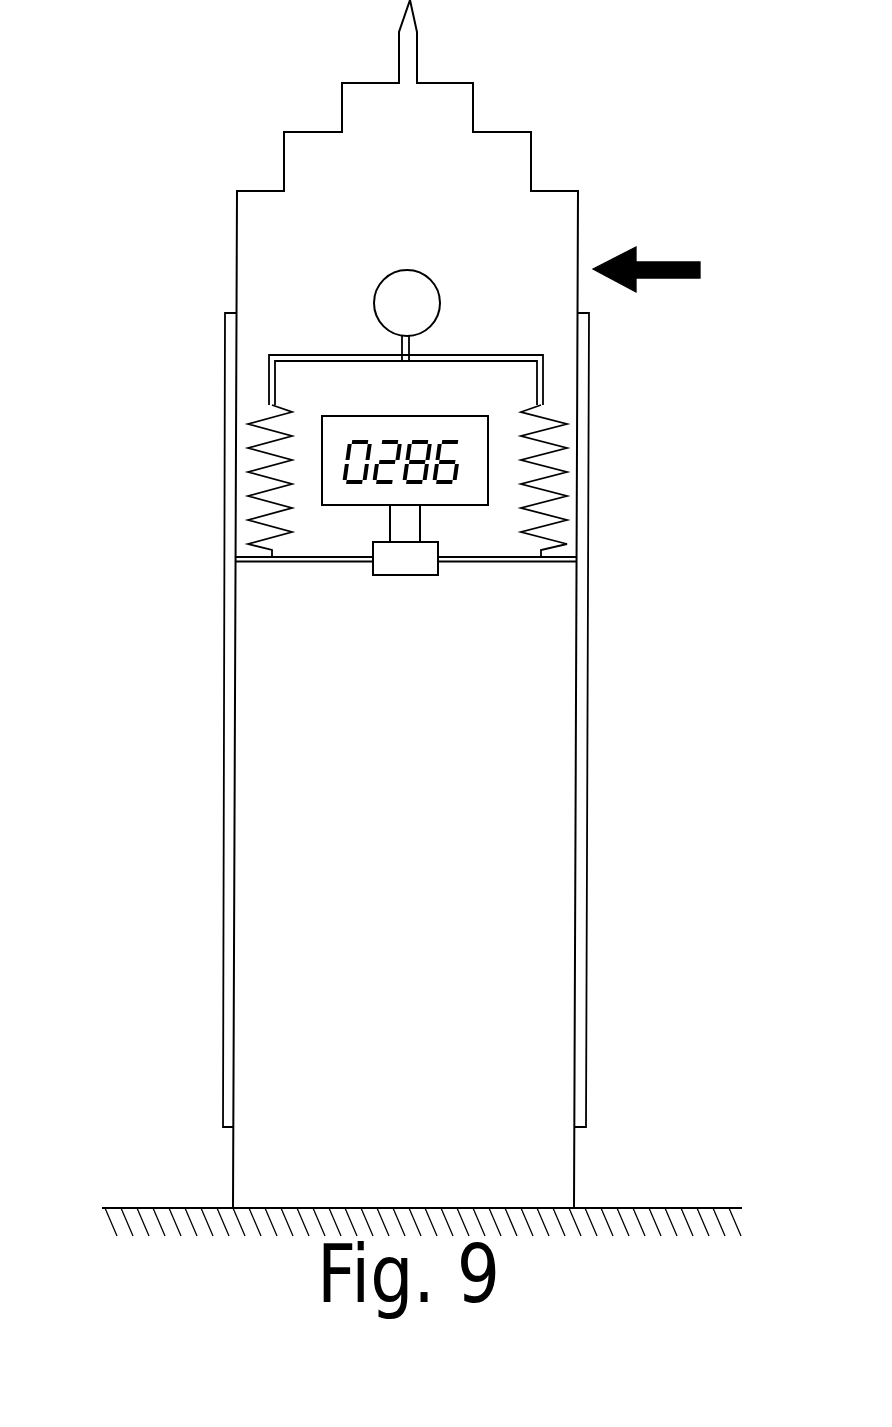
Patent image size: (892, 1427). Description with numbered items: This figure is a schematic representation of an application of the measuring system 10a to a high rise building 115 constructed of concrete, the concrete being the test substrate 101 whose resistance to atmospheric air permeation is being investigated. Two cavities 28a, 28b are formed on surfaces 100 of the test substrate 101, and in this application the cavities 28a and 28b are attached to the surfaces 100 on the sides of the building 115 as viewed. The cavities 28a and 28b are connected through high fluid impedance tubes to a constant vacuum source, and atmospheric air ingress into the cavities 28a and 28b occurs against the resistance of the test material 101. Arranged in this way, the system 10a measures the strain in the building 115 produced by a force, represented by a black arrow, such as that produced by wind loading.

The system 10a is at (403, 604).
The cavity 28a is at (218, 738).
The cavity 28b is at (588, 718).
The test substrate 101 is at (405, 604).
The high rise building 115 is at (405, 577).
The surface 100 is at (574, 1170).